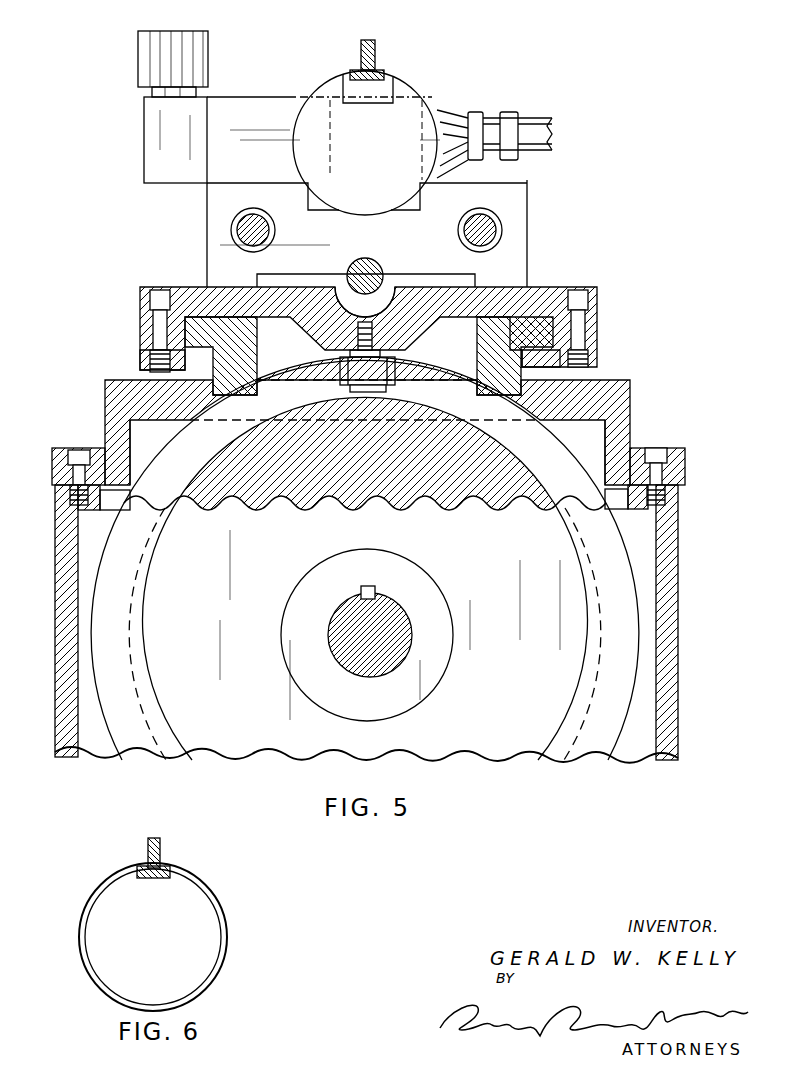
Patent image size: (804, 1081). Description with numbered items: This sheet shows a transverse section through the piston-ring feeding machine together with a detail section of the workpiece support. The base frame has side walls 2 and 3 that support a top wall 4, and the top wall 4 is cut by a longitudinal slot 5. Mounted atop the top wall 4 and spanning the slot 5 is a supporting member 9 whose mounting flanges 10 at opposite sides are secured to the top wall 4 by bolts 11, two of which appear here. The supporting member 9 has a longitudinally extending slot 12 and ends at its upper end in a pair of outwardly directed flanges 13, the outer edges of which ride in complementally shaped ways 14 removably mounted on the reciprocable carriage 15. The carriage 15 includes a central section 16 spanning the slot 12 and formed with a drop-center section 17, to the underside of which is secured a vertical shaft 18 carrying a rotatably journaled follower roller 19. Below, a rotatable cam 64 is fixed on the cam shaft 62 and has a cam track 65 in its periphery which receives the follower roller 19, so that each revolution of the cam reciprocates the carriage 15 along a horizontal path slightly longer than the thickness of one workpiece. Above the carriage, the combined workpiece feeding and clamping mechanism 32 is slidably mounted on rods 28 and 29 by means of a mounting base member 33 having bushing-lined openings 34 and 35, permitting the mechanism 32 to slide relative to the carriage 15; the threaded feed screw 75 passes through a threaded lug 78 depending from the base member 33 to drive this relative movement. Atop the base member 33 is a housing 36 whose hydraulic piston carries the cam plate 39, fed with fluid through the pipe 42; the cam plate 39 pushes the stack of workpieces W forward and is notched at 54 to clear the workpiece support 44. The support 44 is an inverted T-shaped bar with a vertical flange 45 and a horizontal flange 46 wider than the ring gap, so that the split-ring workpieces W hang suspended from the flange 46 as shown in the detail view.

In FIG. 5, the side wall 2 is at (680, 604).
In FIG. 5, the side wall 3 is at (54, 600).
In FIG. 5, the top wall 4 is at (102, 510).
In FIG. 5, the longitudinal slot 5 is at (134, 470).
In FIG. 5, the supporting member 9 is at (646, 378).
In FIG. 5, the mounting flanges 10 is at (54, 454).
In FIG. 5, the bolts 11 is at (80, 452).
In FIG. 5, the longitudinally extending slot 12 is at (478, 340).
In FIG. 5, the outwardly directed flanges 13 is at (152, 322).
In FIG. 5, the ways 14 is at (150, 360).
In FIG. 5, the reciprocable carriage 15 is at (378, 320).
In FIG. 5, the central section 16 is at (284, 292).
In FIG. 5, the drop-center section 17 is at (394, 322).
In FIG. 5, the vertical shaft 18 is at (340, 380).
In FIG. 5, the follower roller 19 is at (390, 376).
In FIG. 5, the rod 28 is at (250, 214).
In FIG. 5, the rod 29 is at (492, 232).
In FIG. 5, the combined workpiece feeding and clamping mechanism 32 is at (127, 175).
In FIG. 5, the mounting base member 33 is at (538, 192).
In FIG. 5, the bushing lined opening 34 is at (240, 232).
In FIG. 5, the bushing lined opening 35 is at (478, 218).
In FIG. 5, the housing 36 is at (278, 102).
In FIG. 5, the cam plate 39 is at (412, 84).
In FIG. 5, the pipe 42 is at (534, 130).
In FIG. 5, the workpiece support 44 is at (375, 42).
In FIG. 5, the vertical flange 45 is at (360, 52).
In FIG. 6, the vertical flange 45 is at (160, 846).
In FIG. 5, the horizontal flange 46 is at (380, 70).
In FIG. 6, the horizontal flange 46 is at (158, 878).
In FIG. 5, the notch 54 is at (342, 72).
In FIG. 5, the cam shaft 62 is at (402, 620).
In FIG. 5, the rotatable cam 64 is at (626, 562).
In FIG. 5, the cam track 65 is at (568, 456).
In FIG. 5, the threaded feed screw 75 is at (382, 262).
In FIG. 5, the threaded lug 78 is at (336, 290).
In FIG. 6, the workpieces W is at (226, 920).